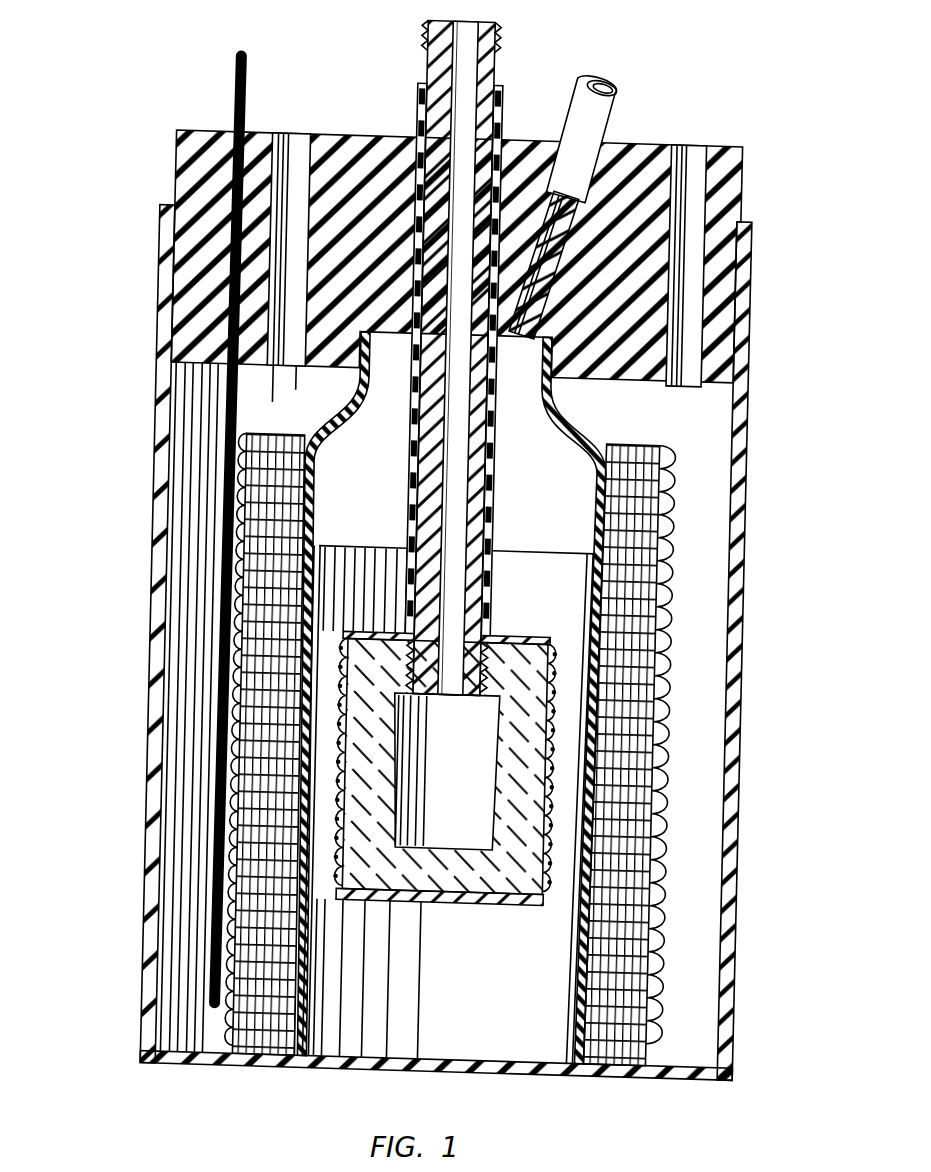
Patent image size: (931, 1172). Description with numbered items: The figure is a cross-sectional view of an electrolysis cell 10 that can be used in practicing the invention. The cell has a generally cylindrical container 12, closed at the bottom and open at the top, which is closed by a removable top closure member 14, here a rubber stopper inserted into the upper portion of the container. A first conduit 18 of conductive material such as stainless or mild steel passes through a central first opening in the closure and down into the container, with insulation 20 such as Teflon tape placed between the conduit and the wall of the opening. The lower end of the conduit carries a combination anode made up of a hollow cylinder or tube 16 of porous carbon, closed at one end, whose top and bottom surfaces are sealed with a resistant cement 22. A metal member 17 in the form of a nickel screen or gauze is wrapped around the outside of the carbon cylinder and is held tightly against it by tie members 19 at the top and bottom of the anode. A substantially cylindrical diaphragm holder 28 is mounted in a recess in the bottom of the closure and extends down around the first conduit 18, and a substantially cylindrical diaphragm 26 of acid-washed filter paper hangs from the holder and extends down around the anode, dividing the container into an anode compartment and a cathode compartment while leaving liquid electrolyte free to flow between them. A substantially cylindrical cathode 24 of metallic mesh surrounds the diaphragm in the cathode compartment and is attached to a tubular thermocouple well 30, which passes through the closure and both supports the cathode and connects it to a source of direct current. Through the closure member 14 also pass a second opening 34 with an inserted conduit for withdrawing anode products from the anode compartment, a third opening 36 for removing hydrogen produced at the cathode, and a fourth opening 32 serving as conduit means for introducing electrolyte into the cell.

The electrolysis cell 10 is at (138, 277).
The container 12 is at (750, 568).
The top closure member 14 is at (735, 157).
The hollow cylinder or tube of porous carbon 16 is at (541, 778).
The metal member 17 is at (561, 850).
The first conduit 18 is at (484, 31).
The tie members 19 is at (557, 637).
The insulation 20 is at (406, 101).
The resistant cement 22 is at (521, 633).
The cathode 24 is at (671, 569).
The diaphragm 26 is at (534, 551).
The diaphragm holder 28 is at (559, 412).
The tubular thermocouple well 30 is at (233, 64).
The fourth opening 32 is at (680, 143).
The second opening 34 is at (606, 90).
The third opening 36 is at (286, 147).